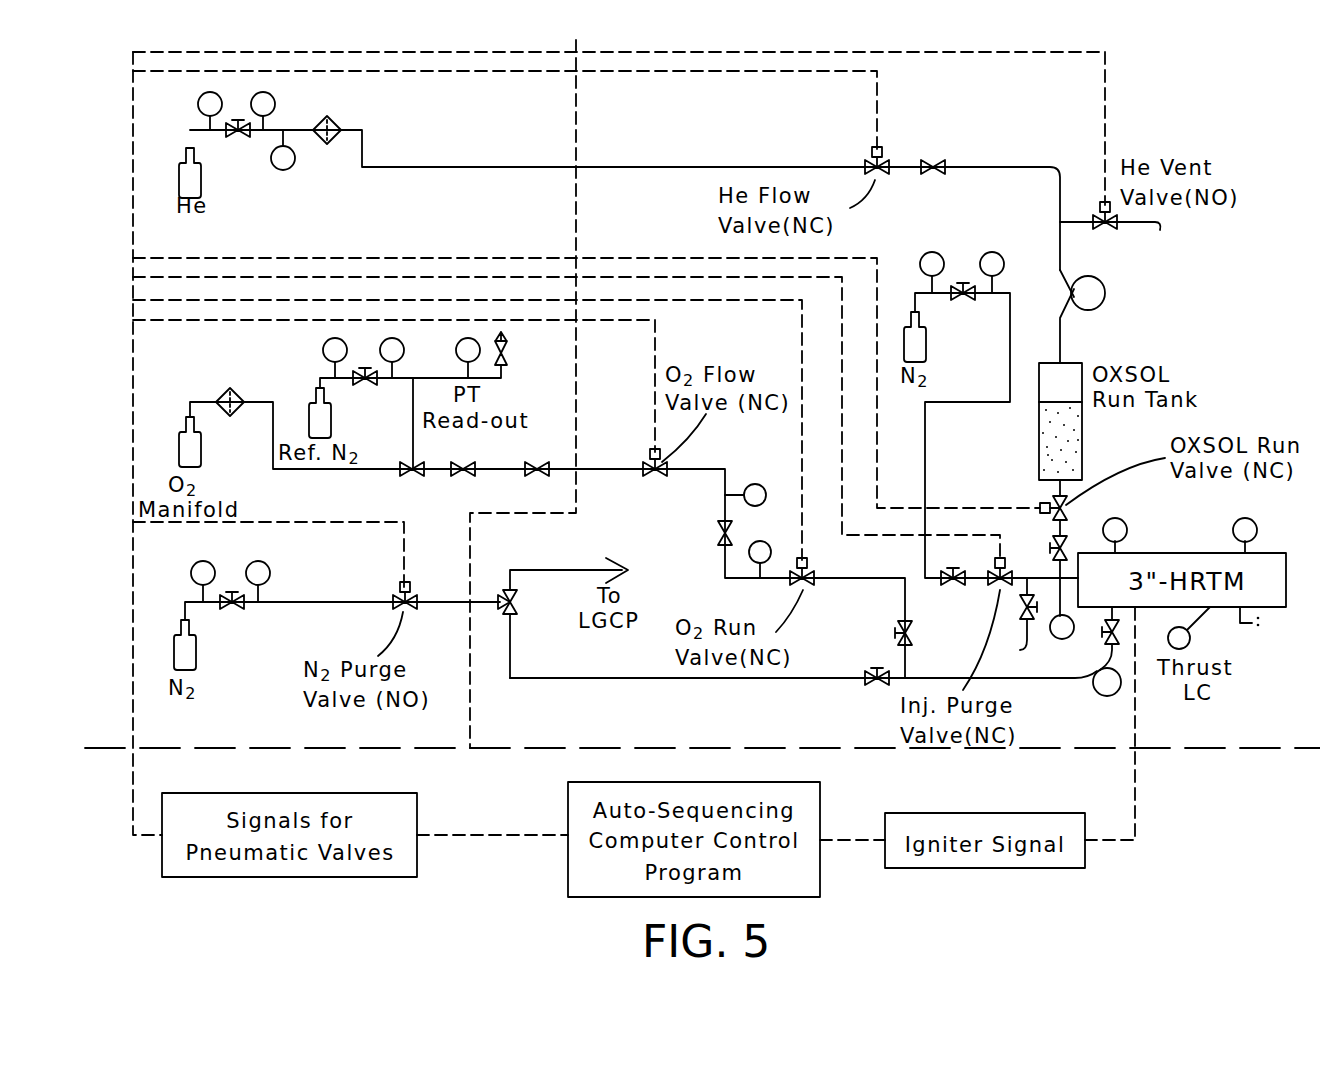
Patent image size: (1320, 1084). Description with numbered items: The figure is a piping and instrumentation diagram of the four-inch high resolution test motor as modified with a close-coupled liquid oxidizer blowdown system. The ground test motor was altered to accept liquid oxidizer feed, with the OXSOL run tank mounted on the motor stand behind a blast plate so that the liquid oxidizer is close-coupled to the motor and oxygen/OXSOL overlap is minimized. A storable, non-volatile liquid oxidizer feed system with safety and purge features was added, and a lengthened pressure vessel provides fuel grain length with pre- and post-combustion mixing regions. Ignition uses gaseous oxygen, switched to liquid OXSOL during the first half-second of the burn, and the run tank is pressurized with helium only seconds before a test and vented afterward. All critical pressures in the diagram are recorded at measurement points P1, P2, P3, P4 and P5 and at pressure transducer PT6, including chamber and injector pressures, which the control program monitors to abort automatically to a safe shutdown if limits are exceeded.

The pressure transducer P1 is at (759, 485).
The pressure transducer P2 is at (771, 549).
The pressure transducer P3 is at (1130, 527).
The pressure transducer P4 is at (1262, 527).
The pressure transducer P5 is at (1062, 641).
The pressure transducer PT6 read-out PT6 is at (309, 184).